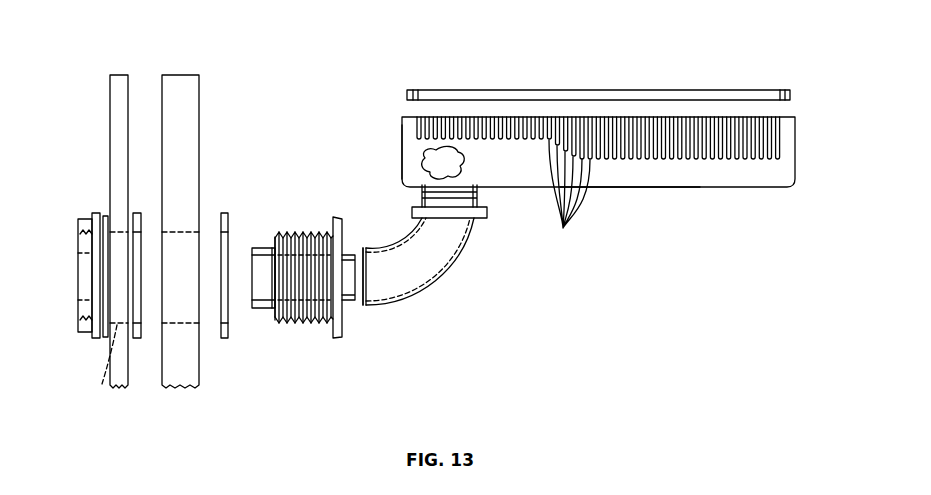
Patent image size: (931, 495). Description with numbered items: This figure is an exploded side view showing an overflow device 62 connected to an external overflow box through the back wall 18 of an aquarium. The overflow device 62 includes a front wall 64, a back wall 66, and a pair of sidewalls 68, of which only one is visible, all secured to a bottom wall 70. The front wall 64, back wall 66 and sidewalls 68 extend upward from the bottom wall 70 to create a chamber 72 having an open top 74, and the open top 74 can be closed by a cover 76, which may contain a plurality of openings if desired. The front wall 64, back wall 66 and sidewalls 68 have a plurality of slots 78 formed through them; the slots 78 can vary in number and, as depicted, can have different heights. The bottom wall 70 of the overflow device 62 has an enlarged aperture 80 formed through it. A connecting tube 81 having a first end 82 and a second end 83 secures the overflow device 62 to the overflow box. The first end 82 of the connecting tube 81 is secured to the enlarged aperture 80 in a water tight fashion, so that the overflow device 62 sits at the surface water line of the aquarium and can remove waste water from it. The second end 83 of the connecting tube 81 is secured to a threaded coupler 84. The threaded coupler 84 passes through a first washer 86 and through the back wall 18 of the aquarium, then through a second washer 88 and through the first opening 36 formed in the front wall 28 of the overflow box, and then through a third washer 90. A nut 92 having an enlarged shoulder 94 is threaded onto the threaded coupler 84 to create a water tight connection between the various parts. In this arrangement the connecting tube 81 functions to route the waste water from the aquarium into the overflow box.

The back wall 18 is at (200, 90).
The front wall 28 is at (128, 87).
The first opening 36 is at (100, 366).
The overflow device 62 is at (590, 143).
The front wall 64 is at (611, 153).
The back wall 66 is at (402, 152).
The sidewalls 68 is at (483, 171).
The bottom wall 70 is at (632, 187).
The chamber 72 is at (433, 172).
The open top 74 is at (781, 117).
The cover 76 is at (657, 90).
The slots 78 is at (569, 195).
The enlarged aperture 80 is at (478, 190).
The connecting tube 81 is at (438, 275).
The first end 82 is at (480, 222).
The second end 83 is at (365, 306).
The threaded coupler 84 is at (303, 232).
The first washer 86 is at (222, 212).
The second washer 88 is at (137, 212).
The third washer 90 is at (106, 215).
The nut 92 is at (80, 335).
The enlarged shoulder 94 is at (92, 340).